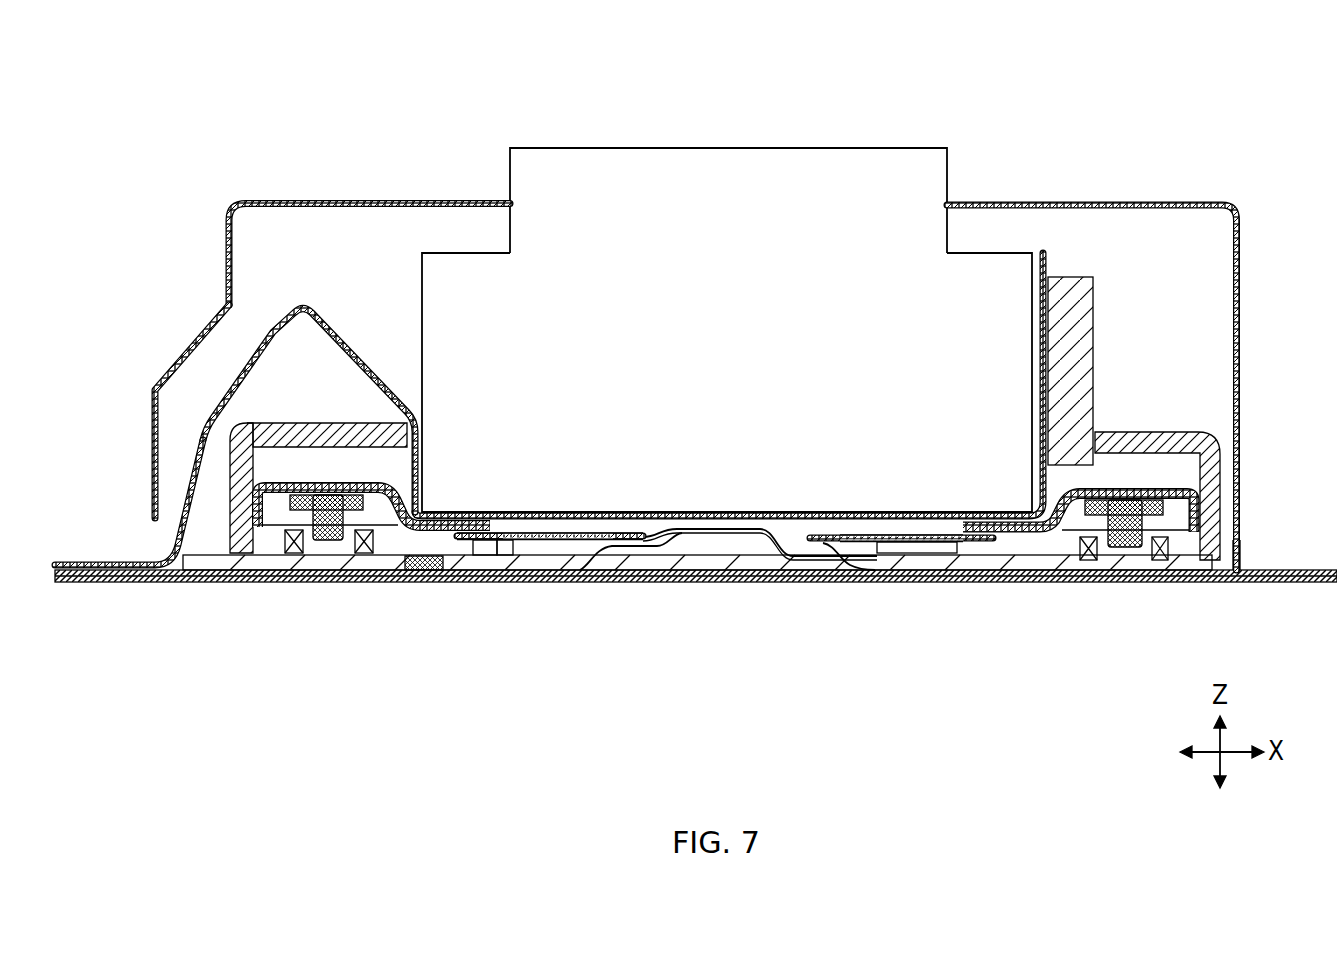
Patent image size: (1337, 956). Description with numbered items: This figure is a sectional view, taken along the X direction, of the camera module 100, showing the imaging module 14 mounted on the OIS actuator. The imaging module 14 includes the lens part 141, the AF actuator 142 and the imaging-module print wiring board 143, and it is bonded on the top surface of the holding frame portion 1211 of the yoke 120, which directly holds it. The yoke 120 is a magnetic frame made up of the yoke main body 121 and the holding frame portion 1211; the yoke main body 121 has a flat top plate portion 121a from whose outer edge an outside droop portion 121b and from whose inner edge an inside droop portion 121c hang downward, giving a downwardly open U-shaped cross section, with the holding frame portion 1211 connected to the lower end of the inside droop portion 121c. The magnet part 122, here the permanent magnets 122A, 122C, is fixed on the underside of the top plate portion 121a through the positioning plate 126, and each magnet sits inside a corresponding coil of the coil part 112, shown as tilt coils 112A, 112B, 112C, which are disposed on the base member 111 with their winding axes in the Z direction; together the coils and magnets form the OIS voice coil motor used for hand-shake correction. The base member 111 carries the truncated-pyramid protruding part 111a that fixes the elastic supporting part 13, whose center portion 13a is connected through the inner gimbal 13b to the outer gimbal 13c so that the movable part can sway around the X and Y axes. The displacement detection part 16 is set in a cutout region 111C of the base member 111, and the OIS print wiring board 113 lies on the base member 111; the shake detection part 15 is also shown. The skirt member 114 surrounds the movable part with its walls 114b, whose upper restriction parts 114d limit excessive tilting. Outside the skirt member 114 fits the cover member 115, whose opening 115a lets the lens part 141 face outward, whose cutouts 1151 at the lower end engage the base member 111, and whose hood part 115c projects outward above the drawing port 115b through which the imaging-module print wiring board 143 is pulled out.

The camera module 100 is at (1080, 77).
The imaging module 14 is at (729, 277).
The lens part 141 is at (540, 147).
The AF actuator 142 is at (460, 250).
The imaging-module print wiring board 143 is at (268, 333).
The yoke 120 is at (687, 297).
The yoke main body 121 is at (687, 315).
The top plate portion 121a is at (333, 482).
The outside droop portion 121b is at (262, 433).
The inside droop portion 121c is at (401, 506).
The holding frame portion 1211 is at (443, 512).
The cover member 115 is at (686, 349).
The opening 115a is at (1036, 201).
The drawing port 115b is at (152, 549).
The hood part 115c is at (186, 352).
The cutouts 1151 is at (1241, 549).
The skirt member 114 is at (238, 392).
The walls 114b is at (230, 468).
The restriction parts 114d is at (343, 432).
The shake detection part 15 is at (1093, 309).
The positioning plate 126 is at (1156, 488).
The elastic supporting part 13 is at (725, 570).
The center portion 13a is at (602, 562).
The inner gimbal 13b is at (512, 534).
The outer gimbal 13c is at (478, 542).
The displacement detection part 16 is at (436, 556).
The base member 111 is at (696, 611).
The protruding part 111a is at (718, 545).
The cutout regions 111C is at (416, 571).
The coil part 112 is at (726, 613).
The tilt coil 112A is at (1092, 560).
The tilt coil 112B is at (508, 556).
The tilt coil 112C is at (362, 555).
The OIS print wiring board 113 is at (545, 568).
The magnet part 122 is at (752, 580).
The permanent magnet 122A is at (1130, 548).
The permanent magnet 122C is at (324, 541).